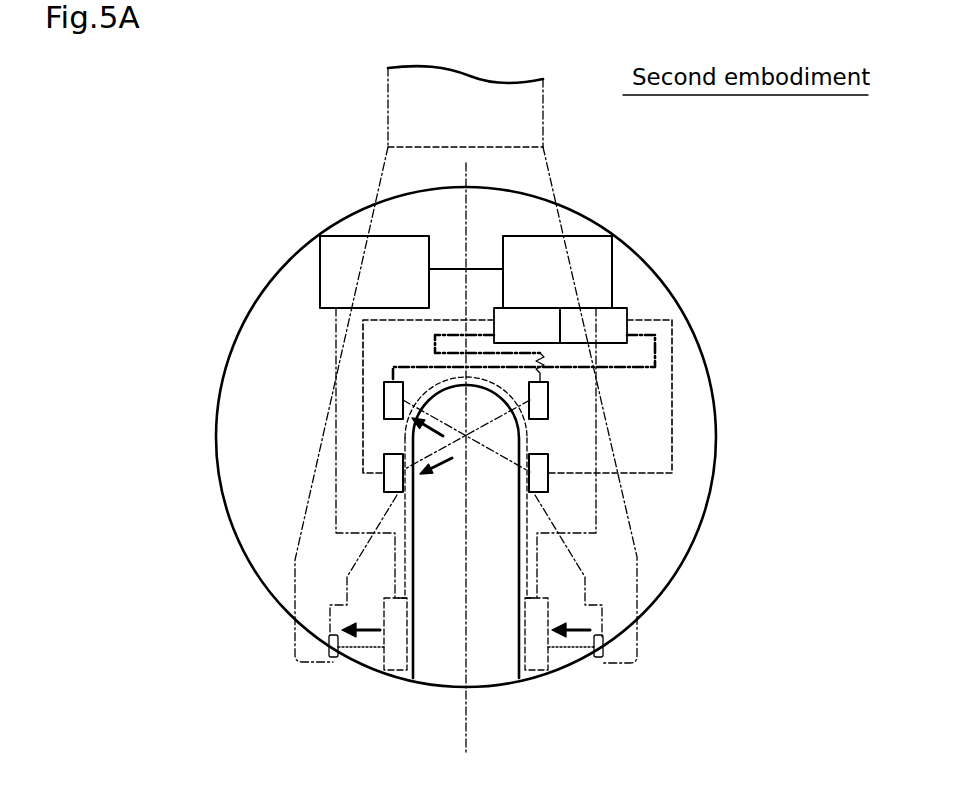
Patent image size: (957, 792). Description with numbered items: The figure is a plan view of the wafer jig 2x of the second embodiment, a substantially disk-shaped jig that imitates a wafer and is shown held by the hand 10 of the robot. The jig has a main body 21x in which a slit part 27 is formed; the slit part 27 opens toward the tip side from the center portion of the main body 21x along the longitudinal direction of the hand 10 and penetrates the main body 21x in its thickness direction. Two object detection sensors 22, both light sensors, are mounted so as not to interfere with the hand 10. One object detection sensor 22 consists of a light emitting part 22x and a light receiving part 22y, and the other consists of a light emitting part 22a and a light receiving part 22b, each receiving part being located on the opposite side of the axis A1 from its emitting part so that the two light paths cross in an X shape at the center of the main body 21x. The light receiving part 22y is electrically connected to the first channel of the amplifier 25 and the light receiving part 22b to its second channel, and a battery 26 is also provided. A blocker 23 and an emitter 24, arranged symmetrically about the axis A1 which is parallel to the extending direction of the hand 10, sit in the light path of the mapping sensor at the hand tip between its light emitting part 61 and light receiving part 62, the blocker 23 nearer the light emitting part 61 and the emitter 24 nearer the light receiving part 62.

The wafer jig 2x is at (535, 437).
The hand 10 is at (294, 572).
The main body 21x is at (683, 530).
The object detection sensor 22 is at (488, 409).
The light emitting part 22a is at (540, 400).
The light receiving part 22b is at (393, 483).
The light emitting part 22x is at (543, 483).
The light receiving part 22y is at (390, 403).
The blocker 23 is at (526, 675).
The emitter 24 is at (408, 672).
The amplifier 25 is at (602, 268).
The battery 26 is at (333, 265).
The slit part 27 is at (420, 565).
The light emitting part 61 is at (597, 658).
The light receiving part 62 is at (334, 658).
The axis A1 is at (466, 745).